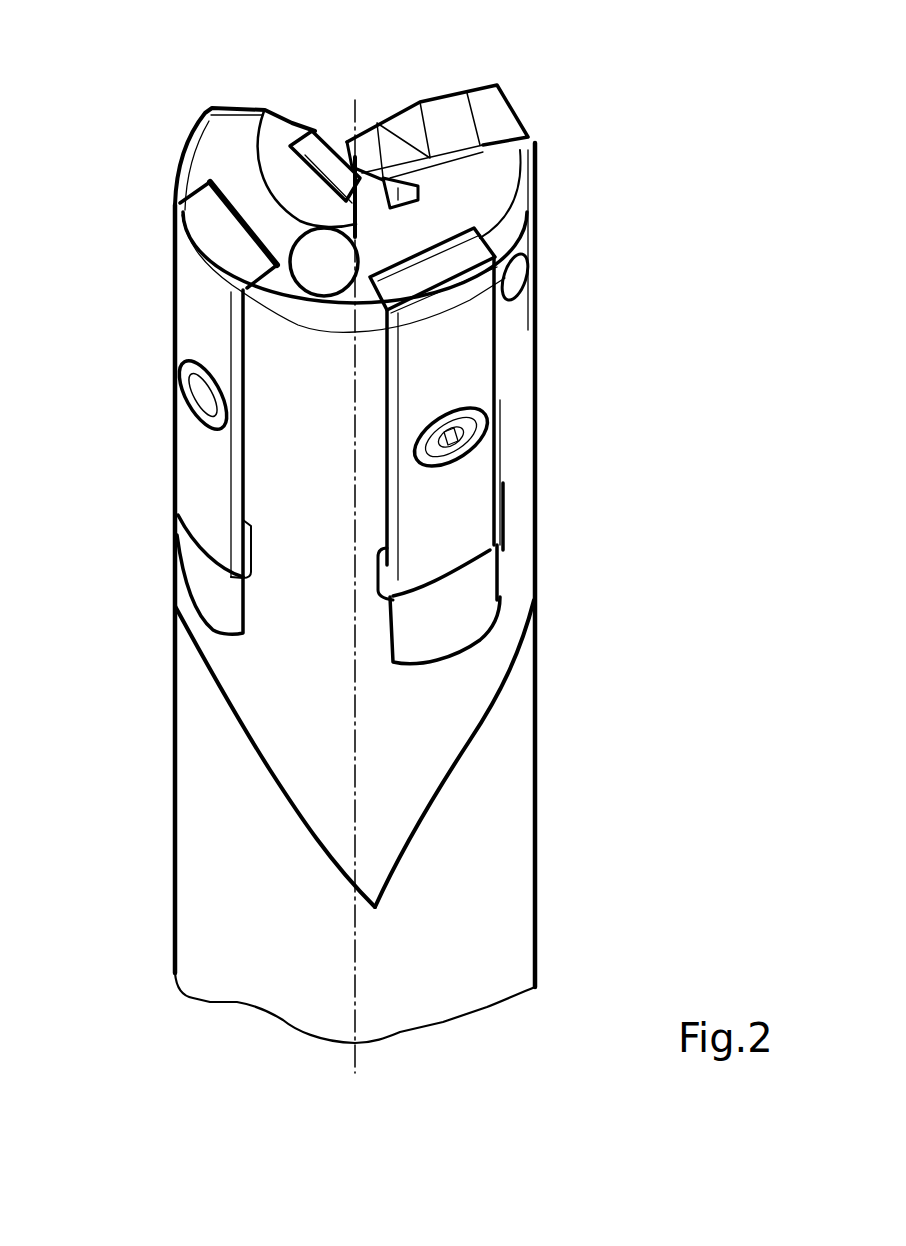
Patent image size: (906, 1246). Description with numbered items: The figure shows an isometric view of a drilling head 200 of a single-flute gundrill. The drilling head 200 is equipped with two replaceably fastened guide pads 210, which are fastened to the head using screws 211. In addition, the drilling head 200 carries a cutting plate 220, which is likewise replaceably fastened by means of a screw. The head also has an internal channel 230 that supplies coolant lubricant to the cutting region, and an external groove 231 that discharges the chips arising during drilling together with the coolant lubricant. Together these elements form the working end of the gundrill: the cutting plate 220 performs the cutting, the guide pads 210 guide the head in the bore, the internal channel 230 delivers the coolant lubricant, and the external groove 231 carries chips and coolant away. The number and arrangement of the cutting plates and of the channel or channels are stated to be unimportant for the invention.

The drilling head 200 is at (513, 652).
The guide pad 210 is at (198, 470).
The screw 211 is at (182, 383).
The cutting plate 220 is at (455, 112).
The internal channel 230 is at (328, 265).
The external groove 231 is at (288, 116).